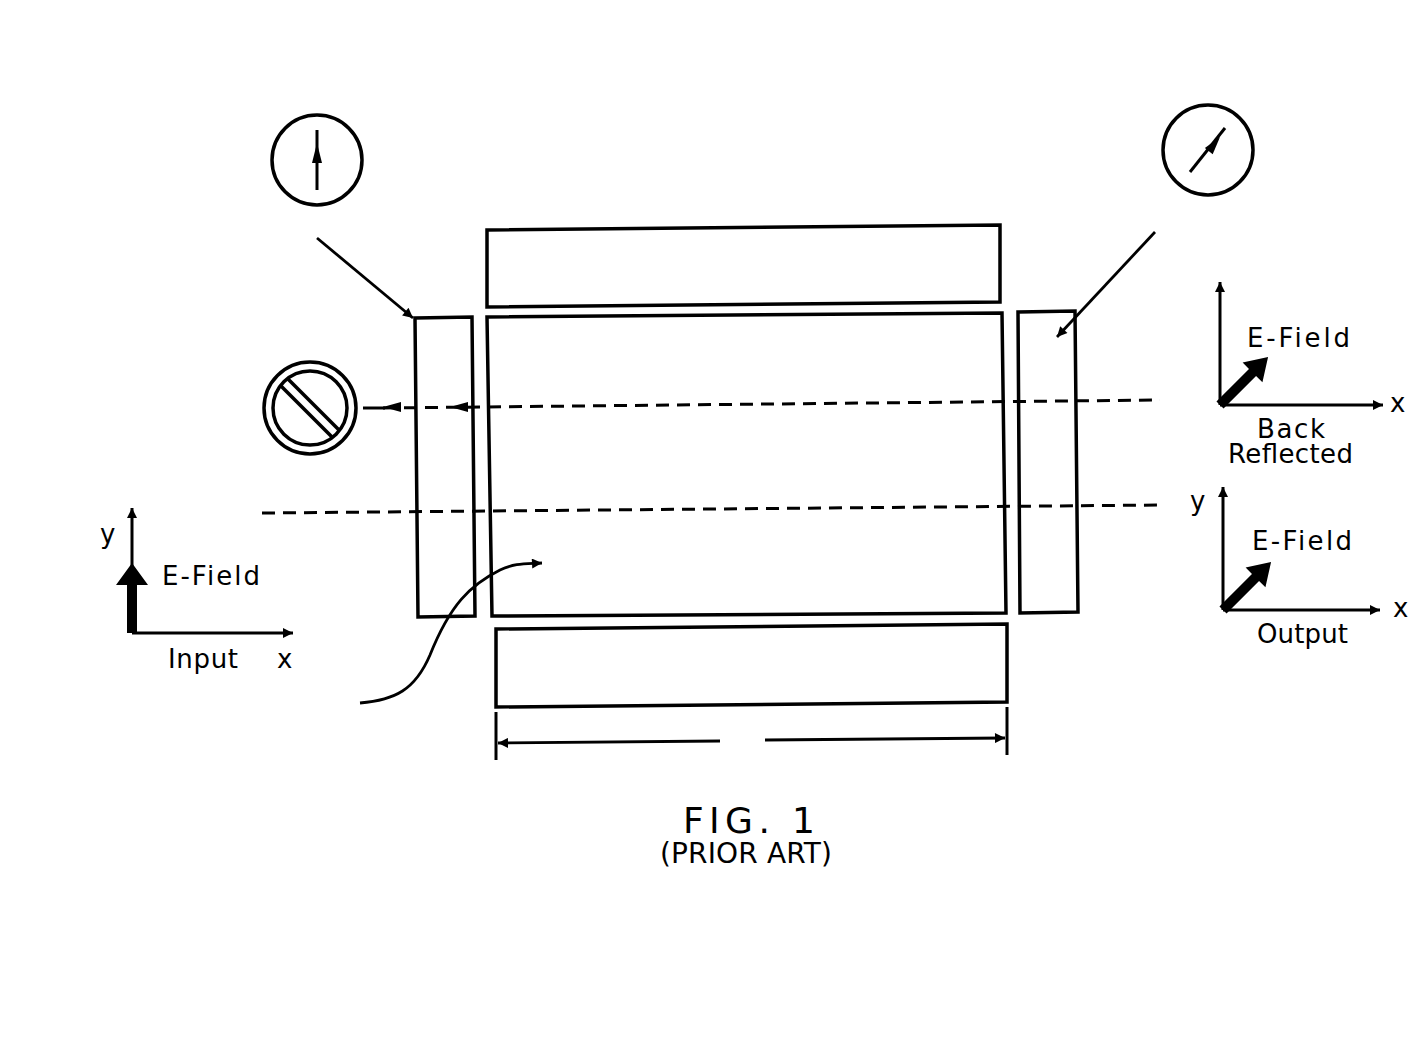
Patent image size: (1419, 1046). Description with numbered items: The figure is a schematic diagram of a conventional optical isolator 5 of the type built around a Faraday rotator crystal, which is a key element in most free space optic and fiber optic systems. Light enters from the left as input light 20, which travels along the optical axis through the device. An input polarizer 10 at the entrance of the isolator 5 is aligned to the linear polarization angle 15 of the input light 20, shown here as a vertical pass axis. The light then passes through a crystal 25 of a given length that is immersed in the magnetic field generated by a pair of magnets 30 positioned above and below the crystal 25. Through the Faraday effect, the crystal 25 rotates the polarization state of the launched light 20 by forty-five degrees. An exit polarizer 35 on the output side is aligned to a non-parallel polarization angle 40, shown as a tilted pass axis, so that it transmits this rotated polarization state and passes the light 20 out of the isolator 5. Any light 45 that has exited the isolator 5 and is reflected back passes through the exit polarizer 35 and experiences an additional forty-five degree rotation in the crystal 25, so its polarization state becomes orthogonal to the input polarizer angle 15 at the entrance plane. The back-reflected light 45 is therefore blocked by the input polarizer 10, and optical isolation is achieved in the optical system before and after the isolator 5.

The optical isolator 5 is at (605, 160).
The input polarizer 10 is at (432, 318).
The linear polarization angle 15 is at (268, 152).
The input light 20 is at (385, 512).
The crystal 25 is at (491, 619).
The magnets 30 is at (818, 226).
The exit polarizer 35 is at (1058, 312).
The non-parallel polarization angle 40 is at (1162, 143).
The back-reflected light 45 is at (1090, 400).